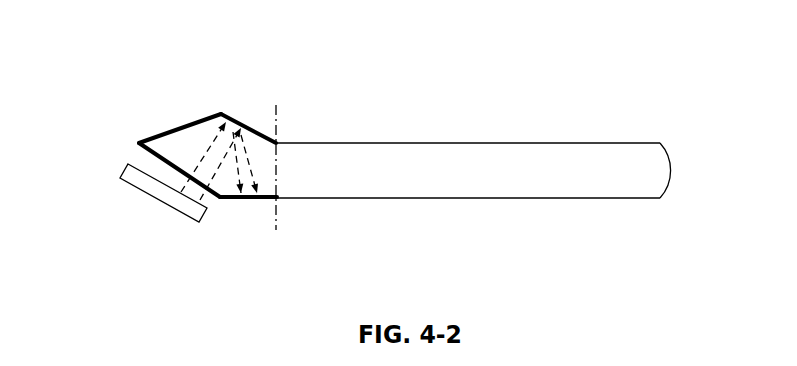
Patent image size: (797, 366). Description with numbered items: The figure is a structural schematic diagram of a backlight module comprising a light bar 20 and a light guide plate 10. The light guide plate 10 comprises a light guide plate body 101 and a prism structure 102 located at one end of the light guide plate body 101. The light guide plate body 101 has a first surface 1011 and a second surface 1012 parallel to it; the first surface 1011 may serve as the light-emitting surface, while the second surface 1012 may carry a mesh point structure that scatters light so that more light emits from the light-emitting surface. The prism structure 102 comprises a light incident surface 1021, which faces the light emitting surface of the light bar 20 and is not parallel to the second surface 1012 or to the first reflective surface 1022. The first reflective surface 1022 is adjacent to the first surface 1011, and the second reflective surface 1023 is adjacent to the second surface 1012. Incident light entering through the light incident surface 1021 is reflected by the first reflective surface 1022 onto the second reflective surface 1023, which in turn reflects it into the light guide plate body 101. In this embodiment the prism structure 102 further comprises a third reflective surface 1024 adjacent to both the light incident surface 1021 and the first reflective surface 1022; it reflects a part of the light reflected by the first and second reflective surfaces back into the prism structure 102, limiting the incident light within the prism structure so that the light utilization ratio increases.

The light guide plate 10 is at (404, 139).
The light guide plate body 101 is at (473, 139).
The first surface 1011 is at (467, 143).
The second surface 1012 is at (467, 198).
The prism structure 102 is at (206, 138).
The light incident surface 1021 is at (147, 149).
The first reflective surface 1022 is at (245, 128).
The second reflective surface 1023 is at (245, 198).
The third reflective surface 1024 is at (160, 130).
The light bar 20 is at (163, 197).